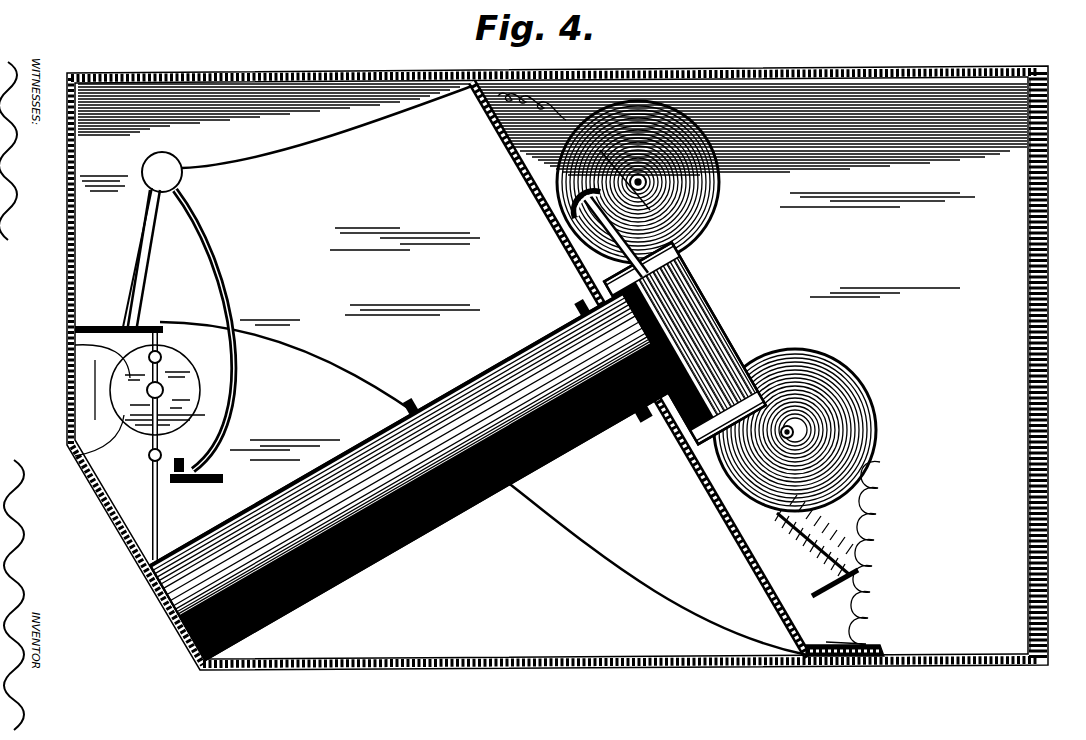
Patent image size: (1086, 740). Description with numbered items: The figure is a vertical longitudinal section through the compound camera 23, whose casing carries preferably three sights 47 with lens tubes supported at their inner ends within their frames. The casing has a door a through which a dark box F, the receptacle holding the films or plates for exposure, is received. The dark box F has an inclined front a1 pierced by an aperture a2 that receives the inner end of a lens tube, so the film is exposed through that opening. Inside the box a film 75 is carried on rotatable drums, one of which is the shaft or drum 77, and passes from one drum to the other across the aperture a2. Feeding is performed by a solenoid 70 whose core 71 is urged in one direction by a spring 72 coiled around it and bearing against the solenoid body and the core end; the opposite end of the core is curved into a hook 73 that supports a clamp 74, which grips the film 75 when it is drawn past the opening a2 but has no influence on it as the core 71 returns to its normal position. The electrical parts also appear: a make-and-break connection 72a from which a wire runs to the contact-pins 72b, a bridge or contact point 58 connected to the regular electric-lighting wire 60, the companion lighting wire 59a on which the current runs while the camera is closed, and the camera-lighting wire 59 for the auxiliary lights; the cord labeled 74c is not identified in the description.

The compound camera 23 is at (308, 72).
The door a is at (1049, 405).
The inclined front a1 is at (737, 532).
The aperture a2 is at (633, 413).
The dark box F is at (915, 241).
The sights 47 is at (322, 458).
The bridge or contact point 58 is at (190, 364).
The camera-lighting wire 59 is at (225, 362).
The electric-lighting wire 59a is at (265, 383).
The electric-lighting wire 60 is at (230, 292).
The solenoid 70 is at (734, 323).
The solenoid core 71 is at (133, 260).
The spring 72 is at (362, 372).
The make-and-break connection 72a is at (135, 327).
The contact-pins 72b is at (829, 657).
The hook 73 is at (162, 233).
The clamp 74 is at (578, 256).
The cord 74c is at (327, 127).
The film 75 is at (598, 118).
The shaft or drum 77 is at (833, 362).